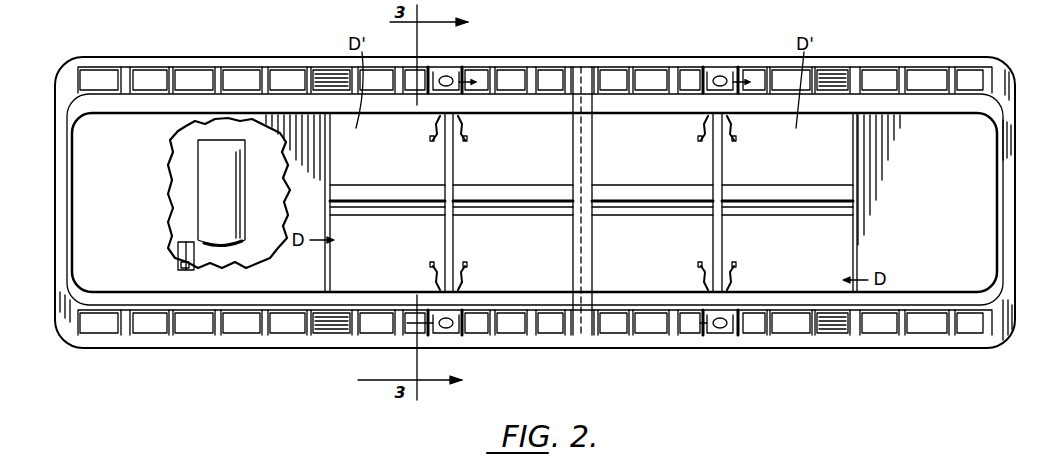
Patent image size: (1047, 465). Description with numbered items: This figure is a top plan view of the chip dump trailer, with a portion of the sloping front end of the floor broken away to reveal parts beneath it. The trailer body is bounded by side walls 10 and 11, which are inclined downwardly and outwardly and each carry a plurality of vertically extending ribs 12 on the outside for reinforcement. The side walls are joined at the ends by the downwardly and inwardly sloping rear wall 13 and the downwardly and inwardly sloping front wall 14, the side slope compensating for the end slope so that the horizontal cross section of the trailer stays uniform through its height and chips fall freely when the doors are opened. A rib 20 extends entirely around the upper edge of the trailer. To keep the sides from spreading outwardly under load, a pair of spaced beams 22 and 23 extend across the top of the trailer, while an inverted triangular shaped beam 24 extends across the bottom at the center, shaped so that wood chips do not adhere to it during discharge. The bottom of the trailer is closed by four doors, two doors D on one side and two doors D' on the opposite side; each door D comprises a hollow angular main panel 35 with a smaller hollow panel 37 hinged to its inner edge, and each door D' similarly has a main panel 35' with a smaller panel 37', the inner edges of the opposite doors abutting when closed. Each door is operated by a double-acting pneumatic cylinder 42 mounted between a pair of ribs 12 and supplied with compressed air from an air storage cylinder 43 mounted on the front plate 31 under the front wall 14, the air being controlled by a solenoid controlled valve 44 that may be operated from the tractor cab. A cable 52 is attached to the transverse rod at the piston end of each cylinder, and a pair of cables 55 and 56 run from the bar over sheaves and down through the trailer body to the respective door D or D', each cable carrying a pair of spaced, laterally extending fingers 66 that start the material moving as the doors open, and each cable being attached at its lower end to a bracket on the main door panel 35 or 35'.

The side wall 10 is at (925, 70).
The side wall 11 is at (803, 336).
The ribs 12 is at (949, 322).
The rear wall 13 is at (958, 263).
The front wall 14 is at (122, 247).
The rib 20 is at (928, 120).
The beam 22 is at (455, 230).
The beam 23 is at (724, 230).
The inverted triangular shaped beam 24 is at (594, 230).
The front plate 31 is at (183, 138).
The main panel 35 is at (586, 259).
The main panel 35' is at (591, 202).
The smaller panel 37 is at (591, 223).
The smaller panel 37' is at (591, 179).
The pneumatic cylinder 42 is at (720, 333).
The air storage cylinder 43 is at (238, 187).
The solenoid controlled valve 44 is at (183, 264).
The cable 52 is at (740, 336).
The cable 55 is at (705, 285).
The cable 56 is at (730, 285).
The fingers 66 is at (732, 262).